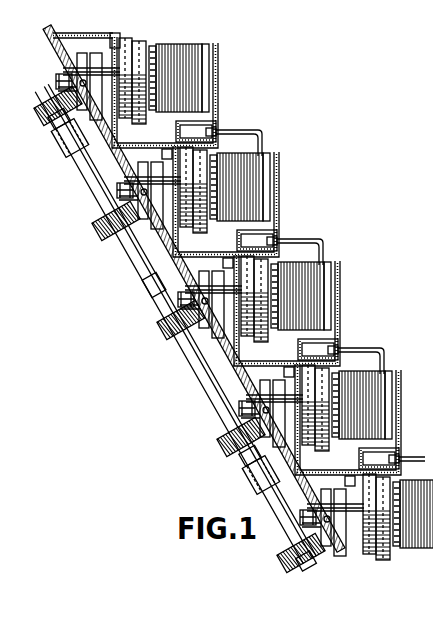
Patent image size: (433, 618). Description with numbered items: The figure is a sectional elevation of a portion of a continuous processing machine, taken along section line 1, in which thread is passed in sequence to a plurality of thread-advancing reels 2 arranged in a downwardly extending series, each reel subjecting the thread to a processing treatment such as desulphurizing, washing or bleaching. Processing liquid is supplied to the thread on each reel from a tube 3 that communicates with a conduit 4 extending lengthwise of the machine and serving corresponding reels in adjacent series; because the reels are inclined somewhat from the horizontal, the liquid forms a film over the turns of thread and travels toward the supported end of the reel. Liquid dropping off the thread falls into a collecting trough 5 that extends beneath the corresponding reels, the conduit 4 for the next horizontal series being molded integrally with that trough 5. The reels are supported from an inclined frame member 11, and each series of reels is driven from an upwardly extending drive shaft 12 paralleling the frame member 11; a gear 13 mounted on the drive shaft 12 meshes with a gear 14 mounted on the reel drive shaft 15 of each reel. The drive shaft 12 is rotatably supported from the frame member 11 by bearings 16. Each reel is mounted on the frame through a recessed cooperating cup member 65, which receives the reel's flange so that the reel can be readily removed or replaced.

The thread 1 is at (148, 8).
The thread-advancing reel 2 is at (203, 78).
The tube 3 is at (263, 145).
The conduit 4 is at (178, 127).
The collecting trough 5 is at (123, 133).
The inclined frame member 11 is at (156, 267).
The drive shaft 12 is at (209, 388).
The gear 13 is at (104, 241).
The gear 14 is at (116, 212).
The reel drive shaft 15 is at (176, 312).
The bearing 16 is at (75, 165).
The cup member 65 is at (163, 287).